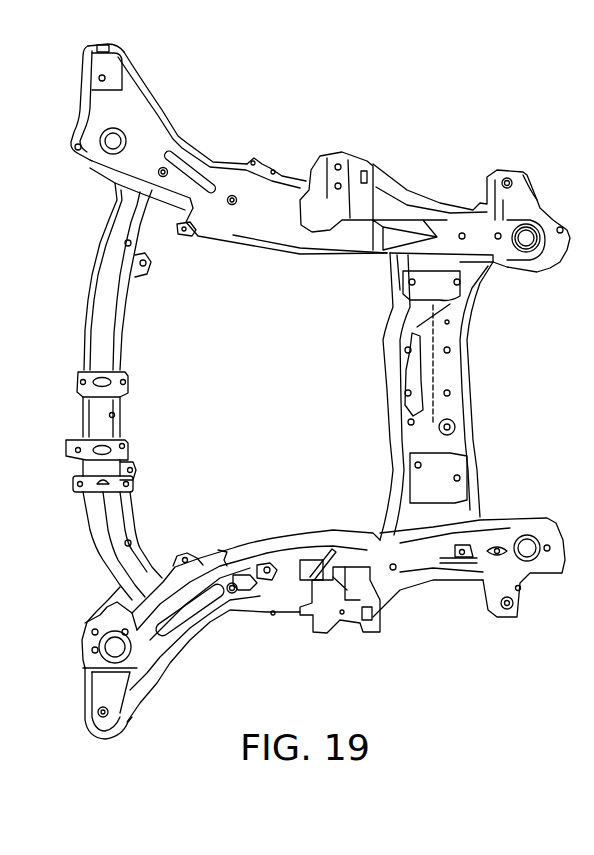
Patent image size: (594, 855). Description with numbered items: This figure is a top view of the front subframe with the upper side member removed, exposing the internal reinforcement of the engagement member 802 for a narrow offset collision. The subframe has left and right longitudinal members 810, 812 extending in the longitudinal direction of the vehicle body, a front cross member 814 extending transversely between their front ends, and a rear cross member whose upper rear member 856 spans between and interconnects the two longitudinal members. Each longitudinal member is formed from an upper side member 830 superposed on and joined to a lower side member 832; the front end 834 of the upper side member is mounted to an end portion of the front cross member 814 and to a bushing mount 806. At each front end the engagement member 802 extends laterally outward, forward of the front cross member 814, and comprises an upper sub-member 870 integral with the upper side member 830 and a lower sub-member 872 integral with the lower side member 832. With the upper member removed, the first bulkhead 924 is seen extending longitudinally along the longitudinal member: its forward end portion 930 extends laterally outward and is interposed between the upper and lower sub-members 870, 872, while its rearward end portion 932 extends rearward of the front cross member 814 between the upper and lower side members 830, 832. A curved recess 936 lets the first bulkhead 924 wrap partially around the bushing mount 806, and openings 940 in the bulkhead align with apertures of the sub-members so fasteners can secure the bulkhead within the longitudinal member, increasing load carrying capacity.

The engagement member 802 is at (178, 83).
The front end of upper side member 834 is at (81, 82).
The upper sub-member 870 is at (121, 115).
The right longitudinal member 812 is at (254, 178).
The upper side member 830 is at (397, 212).
The upper rear member 856 is at (443, 373).
The front cross member 814 is at (80, 333).
The bushing mount 806 is at (103, 623).
The lower sub-member 872 is at (86, 667).
The forward end portion 930 is at (85, 688).
The openings 940 is at (93, 712).
The lower side member 832 is at (273, 557).
The rearward end portion 932 is at (224, 566).
The first bulkhead 924 is at (148, 647).
The curved recess 936 is at (143, 680).
The left longitudinal member 810 is at (403, 580).